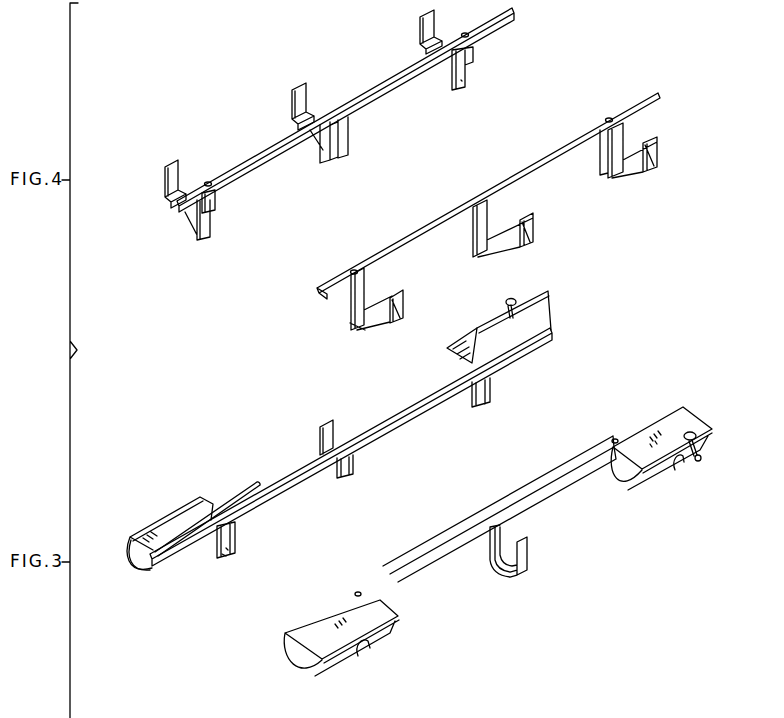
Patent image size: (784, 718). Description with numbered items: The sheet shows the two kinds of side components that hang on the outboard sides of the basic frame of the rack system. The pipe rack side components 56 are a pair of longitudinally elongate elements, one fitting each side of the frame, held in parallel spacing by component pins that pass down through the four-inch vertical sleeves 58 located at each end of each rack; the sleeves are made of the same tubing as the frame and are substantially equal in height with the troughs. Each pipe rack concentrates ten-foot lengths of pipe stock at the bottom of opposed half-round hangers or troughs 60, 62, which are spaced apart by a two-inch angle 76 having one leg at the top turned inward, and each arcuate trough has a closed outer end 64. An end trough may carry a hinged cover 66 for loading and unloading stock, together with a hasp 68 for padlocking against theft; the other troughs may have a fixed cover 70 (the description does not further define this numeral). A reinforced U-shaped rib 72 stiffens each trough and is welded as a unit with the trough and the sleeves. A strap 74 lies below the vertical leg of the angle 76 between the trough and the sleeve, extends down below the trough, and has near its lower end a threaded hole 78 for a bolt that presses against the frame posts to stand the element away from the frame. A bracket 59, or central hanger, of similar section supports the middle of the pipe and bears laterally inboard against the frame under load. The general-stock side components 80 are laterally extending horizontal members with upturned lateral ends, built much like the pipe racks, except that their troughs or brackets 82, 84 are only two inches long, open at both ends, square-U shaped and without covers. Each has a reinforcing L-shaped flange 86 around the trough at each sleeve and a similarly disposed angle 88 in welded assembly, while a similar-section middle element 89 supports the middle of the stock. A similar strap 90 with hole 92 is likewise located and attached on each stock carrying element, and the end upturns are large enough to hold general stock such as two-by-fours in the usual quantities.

In FIG. 3, the pipe rack side component 56 is at (278, 465).
In FIG. 3, the vertical sleeve 58 is at (236, 539).
In FIG. 3, the bracket 59 is at (521, 577).
In FIG. 3, the trough 60 is at (197, 498).
In FIG. 3, the trough 62 is at (448, 352).
In FIG. 3, the closed outer end 64 is at (140, 567).
In FIG. 3, the hinged cover 66 is at (537, 320).
In FIG. 3, the hasp 68 is at (518, 305).
In FIG. 3, the cover 70 is at (377, 618).
In FIG. 3, the U-shaped rib 72 is at (367, 657).
In FIG. 3, the strap 74 is at (213, 553).
In FIG. 3, the angle 76 is at (315, 461).
In FIG. 3, the threaded hole 78 is at (225, 551).
In FIG. 4, the general-stock side component 80 is at (236, 152).
In FIG. 4, the trough 82 is at (175, 162).
In FIG. 4, the trough 84 is at (437, 2).
In FIG. 4, the L-shaped flange 86 is at (403, 322).
In FIG. 4, the angle 88 is at (290, 131).
In FIG. 4, the middle element 89 is at (538, 234).
In FIG. 4, the strap 90 is at (197, 237).
In FIG. 4, the hole 92 is at (208, 238).